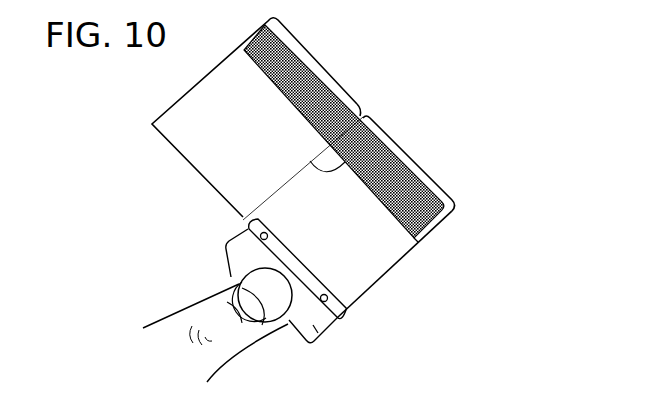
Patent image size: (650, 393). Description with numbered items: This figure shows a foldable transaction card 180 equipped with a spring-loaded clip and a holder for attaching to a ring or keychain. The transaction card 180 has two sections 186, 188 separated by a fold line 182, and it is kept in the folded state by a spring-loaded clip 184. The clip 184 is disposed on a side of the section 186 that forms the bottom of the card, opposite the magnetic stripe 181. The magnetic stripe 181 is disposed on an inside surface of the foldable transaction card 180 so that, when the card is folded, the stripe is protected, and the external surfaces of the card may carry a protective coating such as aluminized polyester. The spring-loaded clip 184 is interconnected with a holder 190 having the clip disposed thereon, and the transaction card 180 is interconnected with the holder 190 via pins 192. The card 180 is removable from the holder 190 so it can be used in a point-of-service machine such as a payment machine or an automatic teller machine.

The foldable transaction card 180 is at (397, 242).
The magnetic stripe 181 is at (434, 198).
The fold line 182 is at (357, 152).
The spring-loaded clip 184 is at (237, 266).
The section 186 is at (353, 268).
The section 188 is at (207, 123).
The holder 190 is at (320, 343).
The pins 192 is at (238, 213).